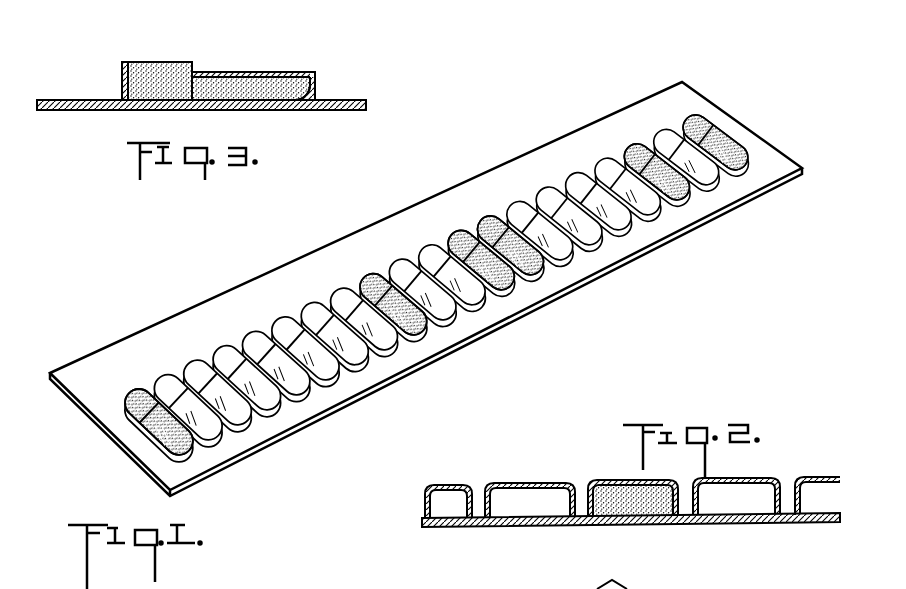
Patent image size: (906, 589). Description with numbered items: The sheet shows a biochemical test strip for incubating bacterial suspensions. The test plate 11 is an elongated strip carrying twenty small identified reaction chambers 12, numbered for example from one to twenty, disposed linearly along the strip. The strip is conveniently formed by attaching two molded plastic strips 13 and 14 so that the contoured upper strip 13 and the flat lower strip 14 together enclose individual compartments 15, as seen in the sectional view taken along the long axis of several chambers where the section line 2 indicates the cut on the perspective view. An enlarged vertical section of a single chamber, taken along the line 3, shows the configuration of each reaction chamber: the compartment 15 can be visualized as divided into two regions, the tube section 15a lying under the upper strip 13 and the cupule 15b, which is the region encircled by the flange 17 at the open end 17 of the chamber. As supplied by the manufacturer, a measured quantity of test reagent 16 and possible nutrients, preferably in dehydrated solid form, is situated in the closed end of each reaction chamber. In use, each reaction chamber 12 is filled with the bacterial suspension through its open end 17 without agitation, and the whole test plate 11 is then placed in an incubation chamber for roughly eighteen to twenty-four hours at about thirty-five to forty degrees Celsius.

In FIG. 1, the test plate 11 is at (228, 292).
In FIG. 1, the reaction chamber 12 is at (214, 450).
In FIG. 3, the reaction chamber 12 is at (303, 25).
In FIG. 2, the molded plastic strip 13 is at (455, 485).
In FIG. 3, the molded plastic strip 13 is at (208, 70).
In FIG. 2, the molded plastic strip 14 is at (443, 526).
In FIG. 3, the molded plastic strip 14 is at (262, 110).
In FIG. 2, the compartment 15 is at (746, 507).
In FIG. 3, the compartment 15 is at (201, 94).
In FIG. 3, the tube section 15a is at (293, 73).
In FIG. 3, the cupule 15b is at (152, 62).
In FIG. 3, the test reagent 16 is at (316, 82).
In FIG. 1, the open end 17 is at (133, 392).
In FIG. 3, the open end 17 is at (124, 62).
In FIG. 1, the section line 2- 2 is at (344, 339).
In FIG. 1, the section line 3- 3 is at (307, 217).